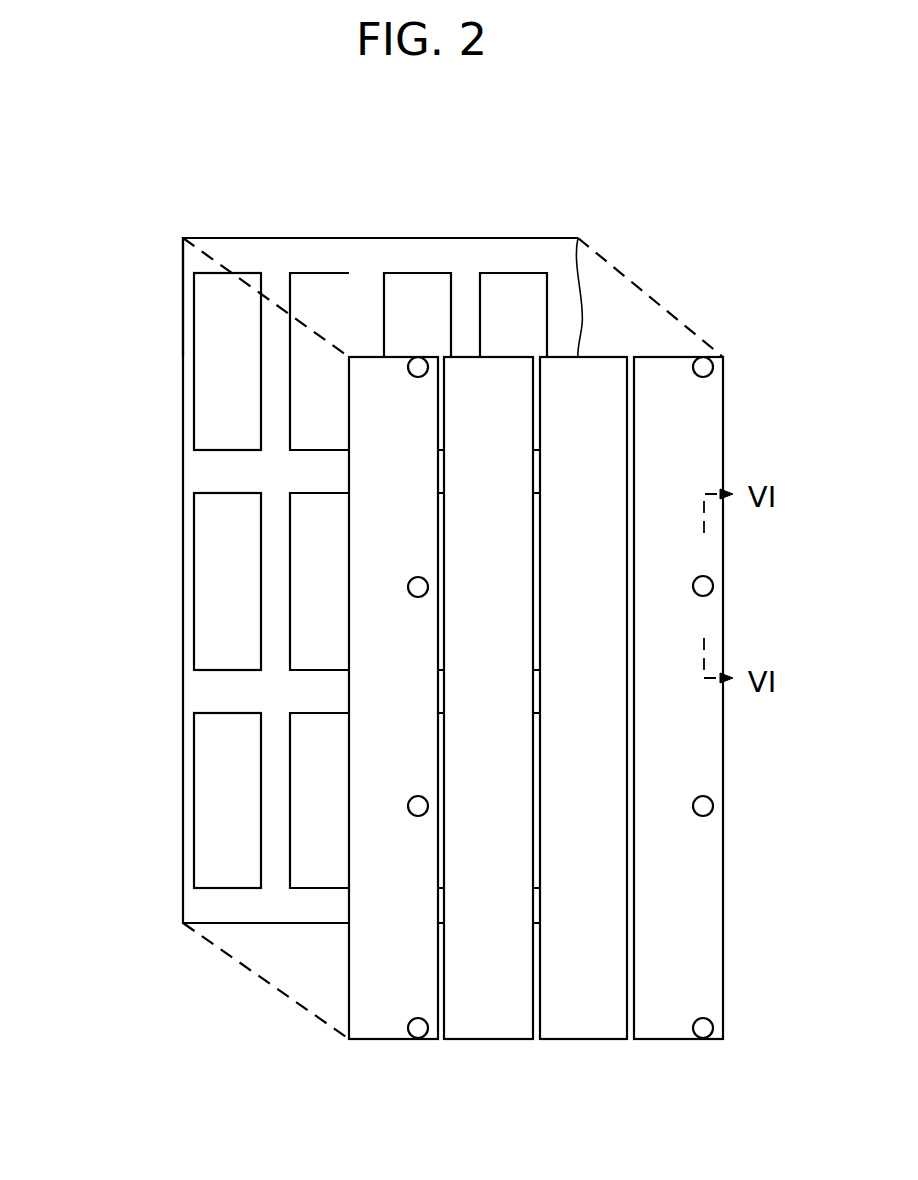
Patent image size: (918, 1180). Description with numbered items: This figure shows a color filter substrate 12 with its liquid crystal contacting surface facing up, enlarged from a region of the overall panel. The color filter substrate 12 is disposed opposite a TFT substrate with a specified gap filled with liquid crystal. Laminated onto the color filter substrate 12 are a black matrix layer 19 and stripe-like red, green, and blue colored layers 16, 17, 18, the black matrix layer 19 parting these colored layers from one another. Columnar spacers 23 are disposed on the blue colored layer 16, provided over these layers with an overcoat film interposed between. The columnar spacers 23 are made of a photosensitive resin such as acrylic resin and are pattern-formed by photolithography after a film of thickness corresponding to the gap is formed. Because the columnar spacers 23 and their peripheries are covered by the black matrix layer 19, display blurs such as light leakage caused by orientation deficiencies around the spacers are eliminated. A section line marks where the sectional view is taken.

The color filter substrate 12 is at (220, 393).
The blue colored layer 16 is at (397, 998).
The green colored layer 17 is at (492, 998).
The red colored layer 18 is at (588, 998).
The black matrix layer 19 is at (180, 602).
The columnar spacer 23 is at (705, 585).